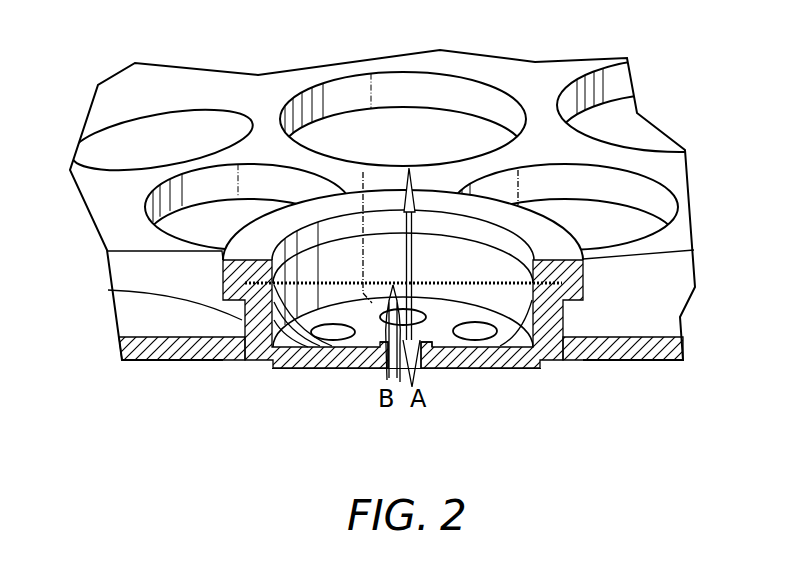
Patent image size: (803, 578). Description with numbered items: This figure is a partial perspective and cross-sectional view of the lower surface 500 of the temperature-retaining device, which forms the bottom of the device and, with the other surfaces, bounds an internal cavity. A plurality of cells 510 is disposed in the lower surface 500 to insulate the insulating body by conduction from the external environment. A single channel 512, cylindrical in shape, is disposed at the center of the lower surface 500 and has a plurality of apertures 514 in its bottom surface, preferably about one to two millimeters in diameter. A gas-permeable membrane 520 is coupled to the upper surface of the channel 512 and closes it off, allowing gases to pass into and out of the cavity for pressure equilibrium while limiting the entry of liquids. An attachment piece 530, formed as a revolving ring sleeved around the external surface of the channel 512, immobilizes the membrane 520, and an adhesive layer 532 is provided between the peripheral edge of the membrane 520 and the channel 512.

The lower surface 500 is at (610, 397).
The cells 510 is at (250, 212).
The channel 512 is at (312, 330).
The apertures 514 is at (421, 360).
The gas-permeable membrane 520 is at (503, 288).
The attachment piece 530 is at (240, 270).
The adhesive layer 532 is at (237, 320).